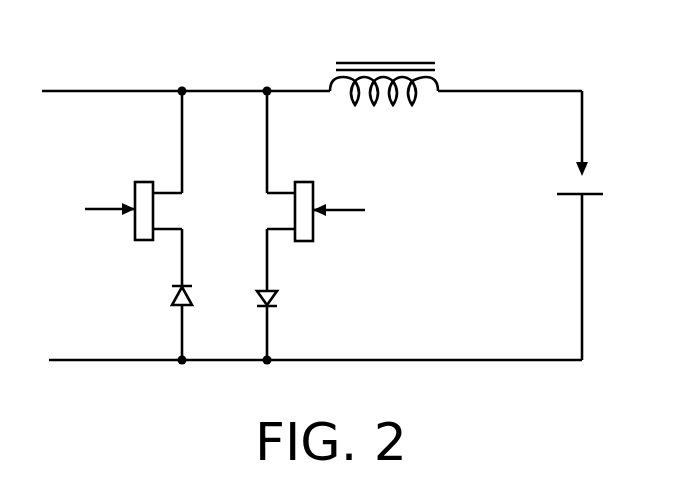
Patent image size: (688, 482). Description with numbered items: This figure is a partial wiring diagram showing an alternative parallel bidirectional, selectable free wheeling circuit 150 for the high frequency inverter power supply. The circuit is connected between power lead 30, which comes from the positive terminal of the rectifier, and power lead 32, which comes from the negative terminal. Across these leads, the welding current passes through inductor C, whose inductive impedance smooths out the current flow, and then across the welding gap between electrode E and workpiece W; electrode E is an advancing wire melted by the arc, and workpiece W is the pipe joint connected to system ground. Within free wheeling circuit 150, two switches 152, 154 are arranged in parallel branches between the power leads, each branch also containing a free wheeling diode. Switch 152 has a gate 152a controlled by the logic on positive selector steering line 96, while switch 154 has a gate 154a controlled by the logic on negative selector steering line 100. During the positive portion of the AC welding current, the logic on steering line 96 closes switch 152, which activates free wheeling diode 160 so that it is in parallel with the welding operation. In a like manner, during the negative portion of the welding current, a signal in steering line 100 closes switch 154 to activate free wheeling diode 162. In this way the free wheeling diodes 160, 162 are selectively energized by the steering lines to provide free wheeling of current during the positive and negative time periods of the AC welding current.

The power lead 30 is at (70, 90).
The power lead 32 is at (62, 362).
The parallel bidirectional, selectable free wheeling circuit 150 is at (155, 128).
The switch 152 is at (133, 236).
The gate 152a is at (113, 203).
The switch 154 is at (305, 243).
The gate 154a is at (338, 215).
The positive selector steering line 96 is at (100, 205).
The negative selector steering line 100 is at (345, 205).
The free wheeling diode 160 is at (170, 302).
The free wheeling diode 162 is at (275, 297).
The inductor C is at (400, 57).
The electrode E is at (590, 167).
The workpiece W is at (590, 196).